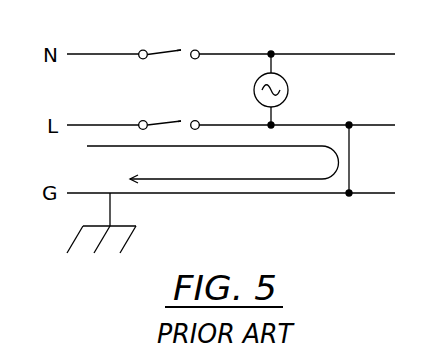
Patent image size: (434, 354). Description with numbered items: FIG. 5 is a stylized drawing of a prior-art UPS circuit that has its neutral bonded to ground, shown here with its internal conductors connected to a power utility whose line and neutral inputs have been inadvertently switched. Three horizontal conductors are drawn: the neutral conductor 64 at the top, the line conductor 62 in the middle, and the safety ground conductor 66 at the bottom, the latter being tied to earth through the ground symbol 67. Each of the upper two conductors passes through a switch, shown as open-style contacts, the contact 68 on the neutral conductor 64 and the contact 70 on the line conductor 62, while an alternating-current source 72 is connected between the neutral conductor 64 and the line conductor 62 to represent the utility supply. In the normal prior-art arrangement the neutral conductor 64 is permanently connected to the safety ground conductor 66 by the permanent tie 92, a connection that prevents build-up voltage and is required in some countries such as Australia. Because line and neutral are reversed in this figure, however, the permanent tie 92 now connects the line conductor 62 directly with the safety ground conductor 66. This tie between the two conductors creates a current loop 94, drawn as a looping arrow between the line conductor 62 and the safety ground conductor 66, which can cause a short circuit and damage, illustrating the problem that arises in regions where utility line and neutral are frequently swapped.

The line conductor 62 is at (112, 125).
The neutral conductor 64 is at (112, 54).
The safety ground conductor 66 is at (100, 193).
The ground 67 is at (135, 227).
The neutral switch contact 68 is at (177, 50).
The line switch contact 70 is at (178, 121).
The AC power source 72 is at (288, 83).
The permanent tie 92 is at (351, 160).
The current loop 94 is at (239, 179).